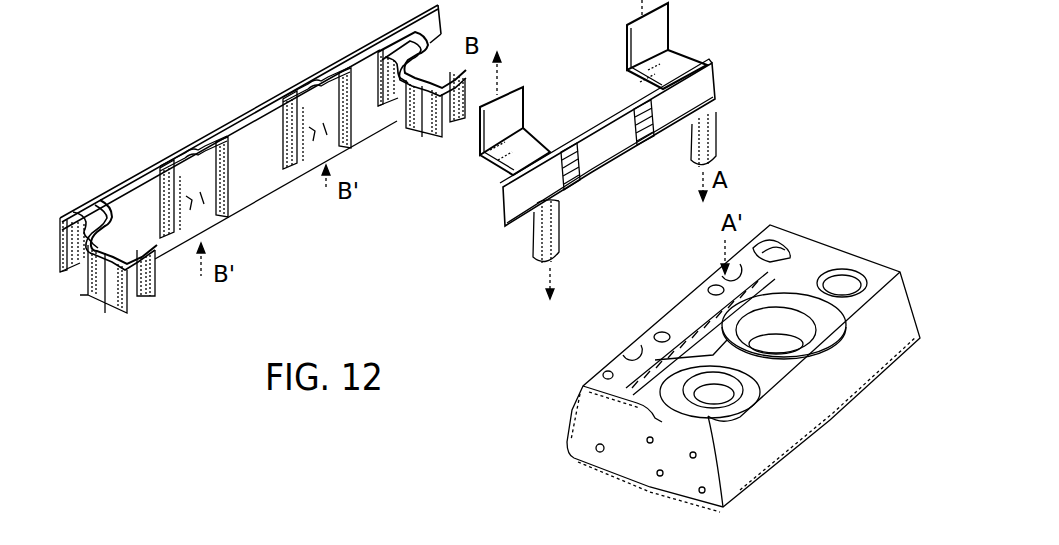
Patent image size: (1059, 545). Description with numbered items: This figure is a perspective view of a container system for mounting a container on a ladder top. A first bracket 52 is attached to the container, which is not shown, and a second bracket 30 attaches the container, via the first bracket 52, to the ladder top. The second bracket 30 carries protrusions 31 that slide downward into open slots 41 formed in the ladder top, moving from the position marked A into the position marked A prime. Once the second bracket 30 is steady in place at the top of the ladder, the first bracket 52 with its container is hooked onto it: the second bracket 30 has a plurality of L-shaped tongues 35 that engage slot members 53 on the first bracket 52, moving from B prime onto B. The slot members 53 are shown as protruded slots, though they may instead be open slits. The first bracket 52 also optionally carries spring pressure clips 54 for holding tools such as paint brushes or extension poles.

The second bracket 30 is at (503, 200).
The protrusions 31 is at (559, 218).
The tongues 35 is at (640, 42).
The open slots 41 is at (630, 354).
The first bracket 52 is at (247, 114).
The slot members 53 is at (318, 133).
The spring pressure clips 54 is at (110, 280).